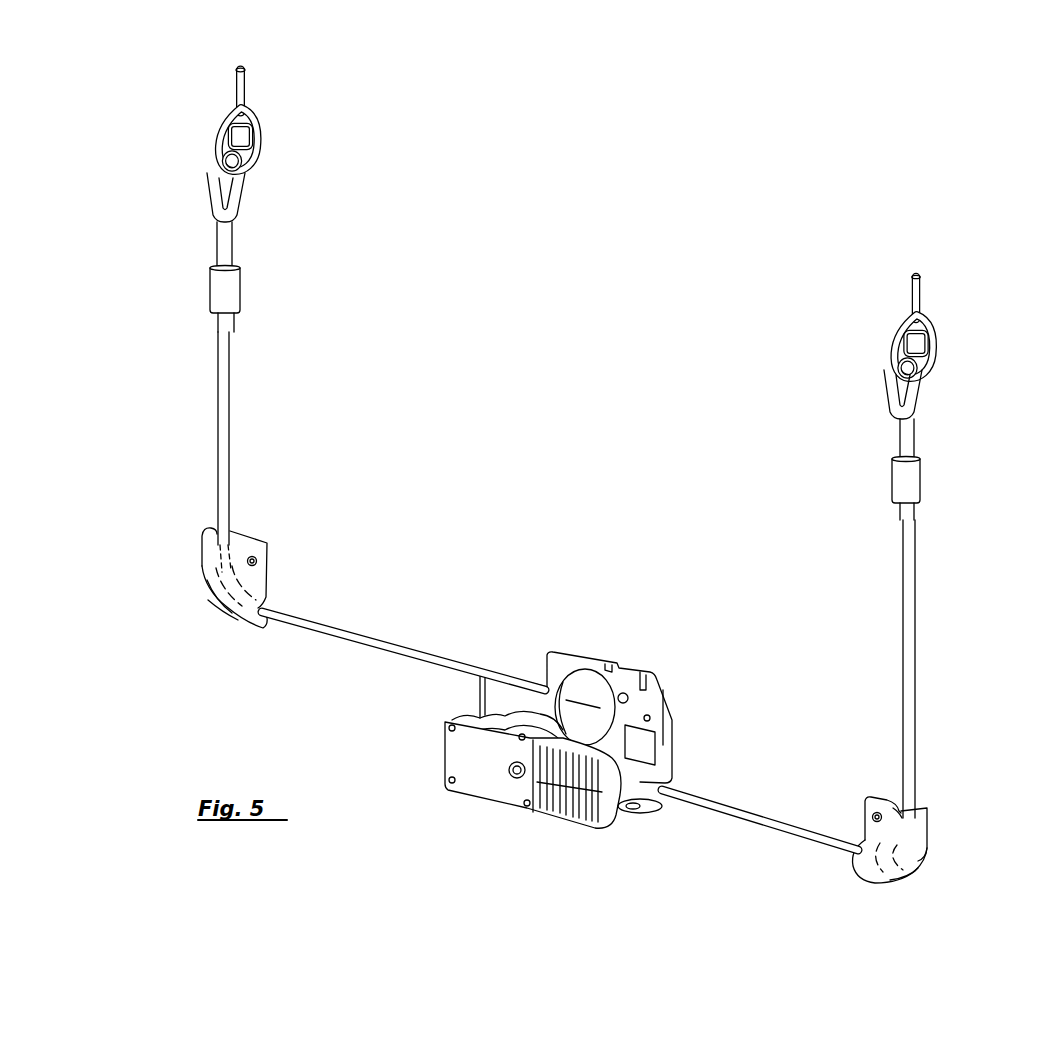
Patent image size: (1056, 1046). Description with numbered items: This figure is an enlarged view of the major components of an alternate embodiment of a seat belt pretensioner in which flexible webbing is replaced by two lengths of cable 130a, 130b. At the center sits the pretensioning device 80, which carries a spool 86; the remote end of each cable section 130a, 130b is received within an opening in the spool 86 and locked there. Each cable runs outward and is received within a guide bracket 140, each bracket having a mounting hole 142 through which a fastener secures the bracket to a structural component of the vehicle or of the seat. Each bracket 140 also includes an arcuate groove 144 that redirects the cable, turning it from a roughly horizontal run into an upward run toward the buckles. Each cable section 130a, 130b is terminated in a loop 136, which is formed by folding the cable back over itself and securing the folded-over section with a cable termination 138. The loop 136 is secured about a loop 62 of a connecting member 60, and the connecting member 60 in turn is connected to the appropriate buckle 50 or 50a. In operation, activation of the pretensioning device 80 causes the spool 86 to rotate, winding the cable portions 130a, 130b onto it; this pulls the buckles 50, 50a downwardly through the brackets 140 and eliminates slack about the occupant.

The buckle 50 is at (245, 68).
The buckle 50a is at (915, 276).
The connecting member 60 is at (250, 110).
The loop 62 is at (247, 138).
The pretensioning device 80 is at (482, 775).
The spool 86 is at (583, 682).
The cable section 130a is at (333, 630).
The cable section 130b is at (743, 807).
The loop 136 is at (208, 185).
The cable termination 138 is at (217, 293).
The guide bracket 140 is at (200, 558).
The mounting hole 142 is at (254, 556).
The arcuate groove 144 is at (232, 587).